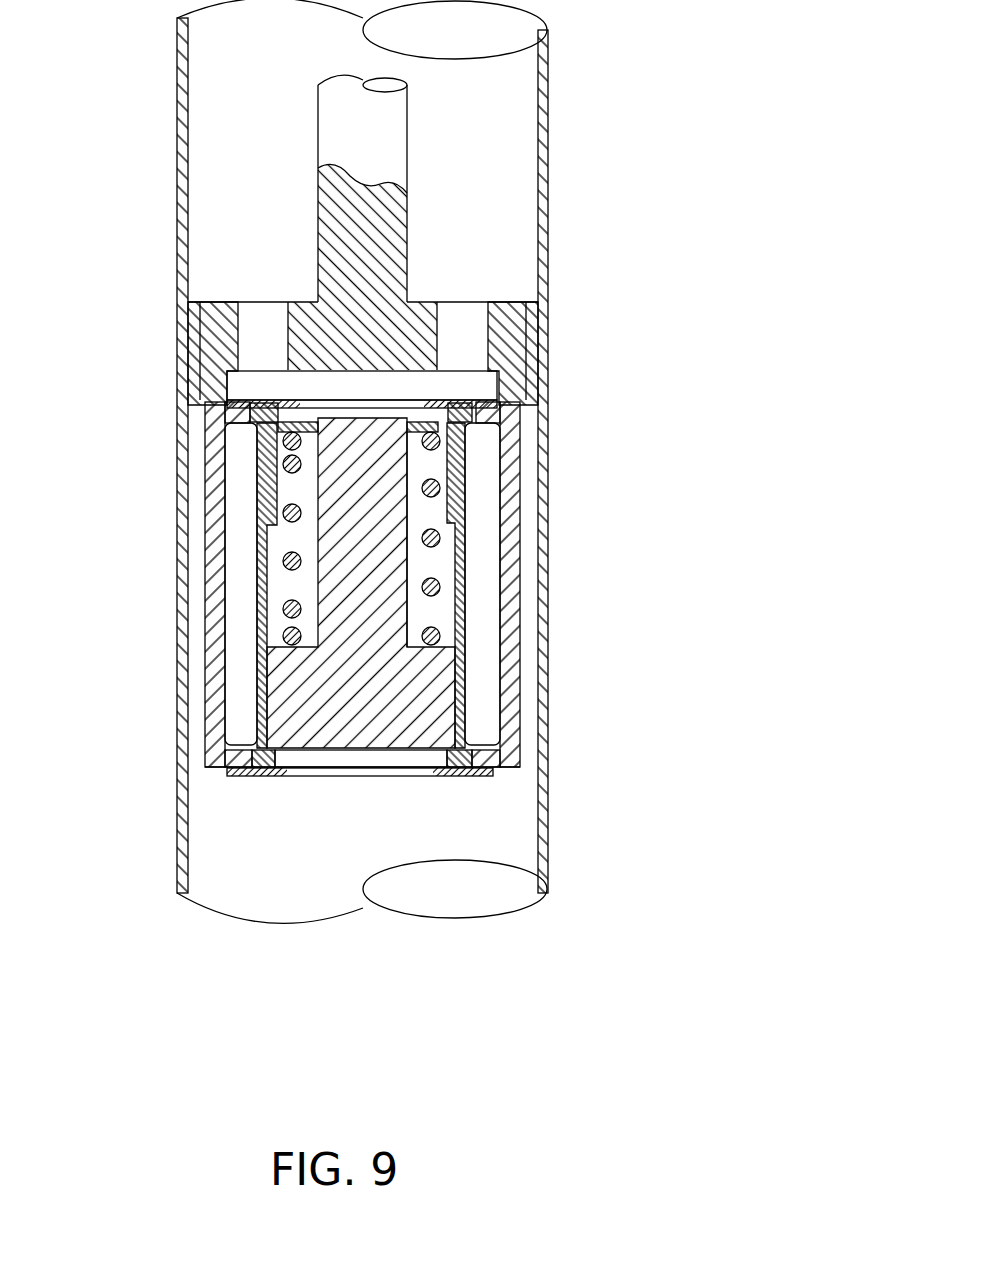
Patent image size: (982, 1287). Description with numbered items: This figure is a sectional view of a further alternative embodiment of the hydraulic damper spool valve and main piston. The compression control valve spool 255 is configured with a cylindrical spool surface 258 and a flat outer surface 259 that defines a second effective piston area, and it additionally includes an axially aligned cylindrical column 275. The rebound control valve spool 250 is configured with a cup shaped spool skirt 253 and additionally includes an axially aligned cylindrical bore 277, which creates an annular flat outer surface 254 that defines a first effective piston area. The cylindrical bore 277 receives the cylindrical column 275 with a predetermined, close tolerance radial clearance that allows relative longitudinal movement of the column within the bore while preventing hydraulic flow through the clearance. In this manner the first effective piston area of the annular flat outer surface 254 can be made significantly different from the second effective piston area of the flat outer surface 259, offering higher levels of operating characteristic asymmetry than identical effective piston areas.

The rebound control valve spool 250 is at (462, 463).
The cup shaped spool skirt 253 is at (455, 515).
The annular flat outer surface 254 is at (307, 428).
The compression control valve spool 255 is at (457, 727).
The cylindrical spool surface 258 is at (457, 667).
The flat outer surface 259 is at (367, 750).
The cylindrical column 275 is at (407, 570).
The cylindrical bore 277 is at (407, 430).